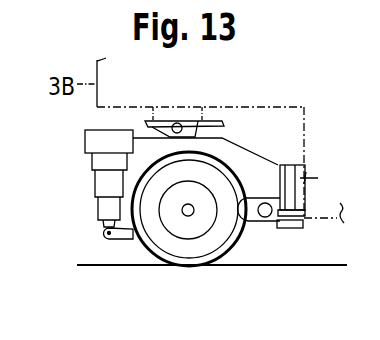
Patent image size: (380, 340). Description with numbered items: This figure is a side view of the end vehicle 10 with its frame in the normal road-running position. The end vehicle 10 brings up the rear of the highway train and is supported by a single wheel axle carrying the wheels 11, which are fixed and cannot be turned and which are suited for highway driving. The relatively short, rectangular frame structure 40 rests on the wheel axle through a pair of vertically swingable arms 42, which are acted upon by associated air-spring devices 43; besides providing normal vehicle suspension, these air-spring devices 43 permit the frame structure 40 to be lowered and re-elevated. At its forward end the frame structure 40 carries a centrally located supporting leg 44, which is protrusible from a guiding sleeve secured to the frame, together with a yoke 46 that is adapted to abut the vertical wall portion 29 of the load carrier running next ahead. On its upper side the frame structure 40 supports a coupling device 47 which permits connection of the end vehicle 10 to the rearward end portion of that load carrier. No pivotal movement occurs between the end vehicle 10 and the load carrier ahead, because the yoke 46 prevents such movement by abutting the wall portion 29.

The end vehicle 10 is at (262, 140).
The wheels 11 is at (192, 250).
The vertical wall portion 29 is at (304, 107).
The frame structure 40 is at (255, 166).
The vertically swingable arms 42 is at (110, 240).
The air-spring devices 43 is at (92, 166).
The supporting leg 44 is at (295, 230).
The yoke 46 is at (322, 176).
The coupling device 47 is at (208, 121).